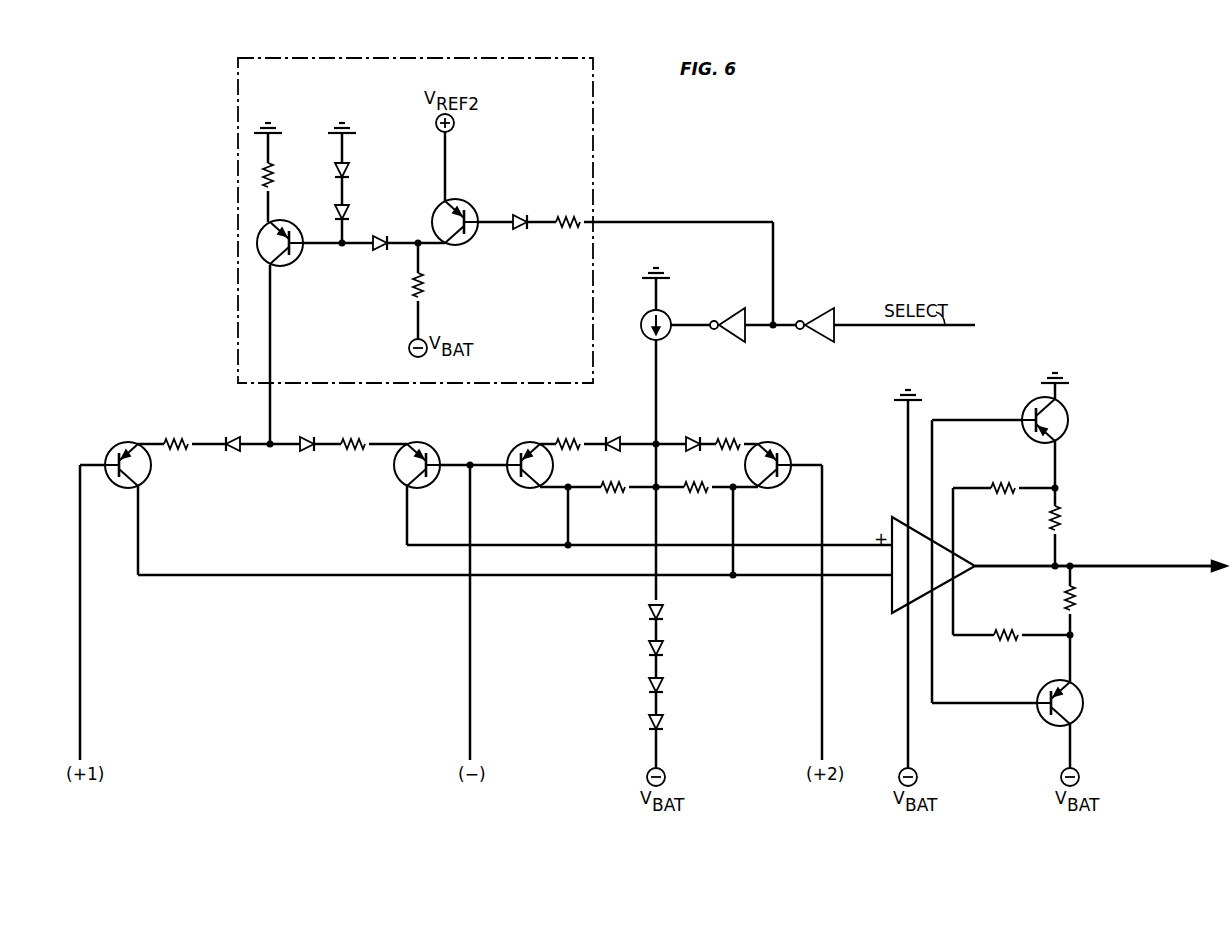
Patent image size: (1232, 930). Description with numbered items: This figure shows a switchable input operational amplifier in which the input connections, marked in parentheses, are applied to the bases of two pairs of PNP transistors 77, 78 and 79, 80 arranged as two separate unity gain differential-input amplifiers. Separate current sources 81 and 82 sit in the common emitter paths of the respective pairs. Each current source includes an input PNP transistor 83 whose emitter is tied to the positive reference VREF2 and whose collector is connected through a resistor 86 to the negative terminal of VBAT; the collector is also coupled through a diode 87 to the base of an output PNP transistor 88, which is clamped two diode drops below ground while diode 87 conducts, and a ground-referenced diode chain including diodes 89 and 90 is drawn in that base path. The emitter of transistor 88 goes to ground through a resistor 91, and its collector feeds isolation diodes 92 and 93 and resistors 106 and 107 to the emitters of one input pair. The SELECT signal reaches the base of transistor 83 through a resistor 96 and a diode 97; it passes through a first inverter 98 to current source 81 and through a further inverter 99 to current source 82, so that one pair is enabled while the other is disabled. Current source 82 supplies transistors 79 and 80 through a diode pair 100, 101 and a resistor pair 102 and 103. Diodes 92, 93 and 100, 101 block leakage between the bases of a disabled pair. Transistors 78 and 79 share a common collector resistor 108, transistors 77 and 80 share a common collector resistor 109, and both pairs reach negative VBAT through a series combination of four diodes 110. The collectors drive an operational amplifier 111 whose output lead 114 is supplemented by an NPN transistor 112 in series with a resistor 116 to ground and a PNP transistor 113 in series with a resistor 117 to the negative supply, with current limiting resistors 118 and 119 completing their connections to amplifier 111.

The PNP transistor 77 is at (124, 455).
The PNP transistor 78 is at (423, 456).
The PNP transistor 79 is at (523, 456).
The PNP transistor 80 is at (775, 456).
The current source 81 is at (594, 72).
The current source 82 is at (659, 328).
The input PNP transistor 83 is at (461, 230).
The resistor 86 is at (431, 285).
The diode 87 is at (379, 255).
The output PNP transistor 88 is at (288, 249).
The diode 89 is at (354, 171).
The diode 90 is at (354, 213).
The resistor 91 is at (281, 175).
The isolation diode 92 is at (233, 433).
The isolation diode 93 is at (307, 433).
The resistor 96 is at (569, 210).
The diode 97 is at (521, 211).
The first inverter 98 is at (815, 315).
The further inverter 99 is at (727, 315).
The diode 100 is at (616, 433).
The diode 101 is at (698, 433).
The resistor 102 is at (572, 432).
The resistor 103 is at (732, 432).
The resistor 106 is at (181, 432).
The resistor 107 is at (357, 432).
The common collector resistor 108 is at (617, 499).
The common collector resistor 109 is at (702, 499).
The series combination of four diodes 110 is at (676, 600).
The operational amplifier 111 is at (963, 554).
The NPN transistor 112 is at (1061, 420).
The PNP transistor 113 is at (1076, 701).
The output lead 114 is at (1206, 563).
The resistor 116 is at (1073, 518).
The resistor 117 is at (1088, 598).
The current limiting resistor 118 is at (1008, 476).
The current limiting resistor 119 is at (1010, 623).